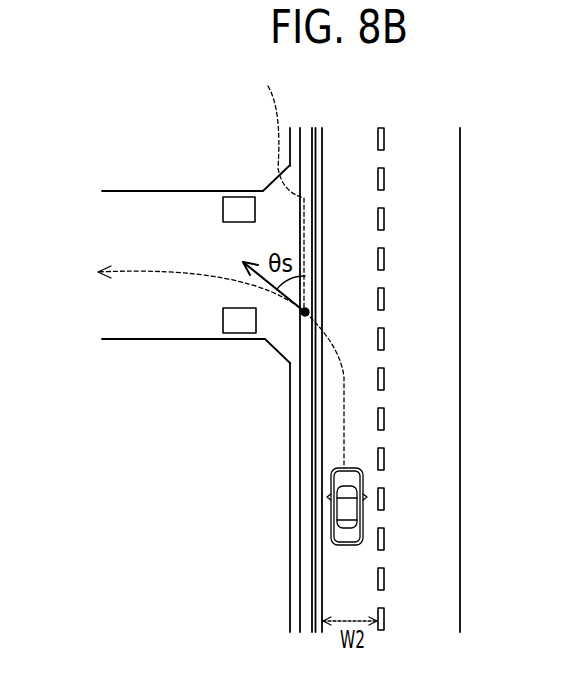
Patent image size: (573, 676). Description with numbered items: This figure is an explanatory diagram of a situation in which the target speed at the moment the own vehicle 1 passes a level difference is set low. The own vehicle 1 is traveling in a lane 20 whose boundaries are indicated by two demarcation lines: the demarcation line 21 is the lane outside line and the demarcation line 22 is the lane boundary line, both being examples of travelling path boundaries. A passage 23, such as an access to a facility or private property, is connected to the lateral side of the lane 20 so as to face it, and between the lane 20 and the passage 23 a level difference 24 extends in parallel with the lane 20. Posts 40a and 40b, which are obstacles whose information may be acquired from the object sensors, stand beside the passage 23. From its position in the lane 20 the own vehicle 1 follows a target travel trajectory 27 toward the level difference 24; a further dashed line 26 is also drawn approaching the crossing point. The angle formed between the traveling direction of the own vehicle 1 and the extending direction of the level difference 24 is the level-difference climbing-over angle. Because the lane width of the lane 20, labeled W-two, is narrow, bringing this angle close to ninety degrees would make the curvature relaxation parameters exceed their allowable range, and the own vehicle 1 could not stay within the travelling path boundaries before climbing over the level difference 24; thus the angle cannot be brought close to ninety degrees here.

The own vehicle 1 is at (348, 548).
The lane 20 is at (359, 145).
The demarcation line 21 is at (322, 147).
The demarcation line 22 is at (385, 287).
The passage 23 is at (162, 215).
The level difference 24 is at (290, 553).
The virtual reference line 26 is at (273, 186).
The target travel trajectory 27 is at (344, 388).
The post 40a is at (241, 197).
The post 40b is at (241, 333).